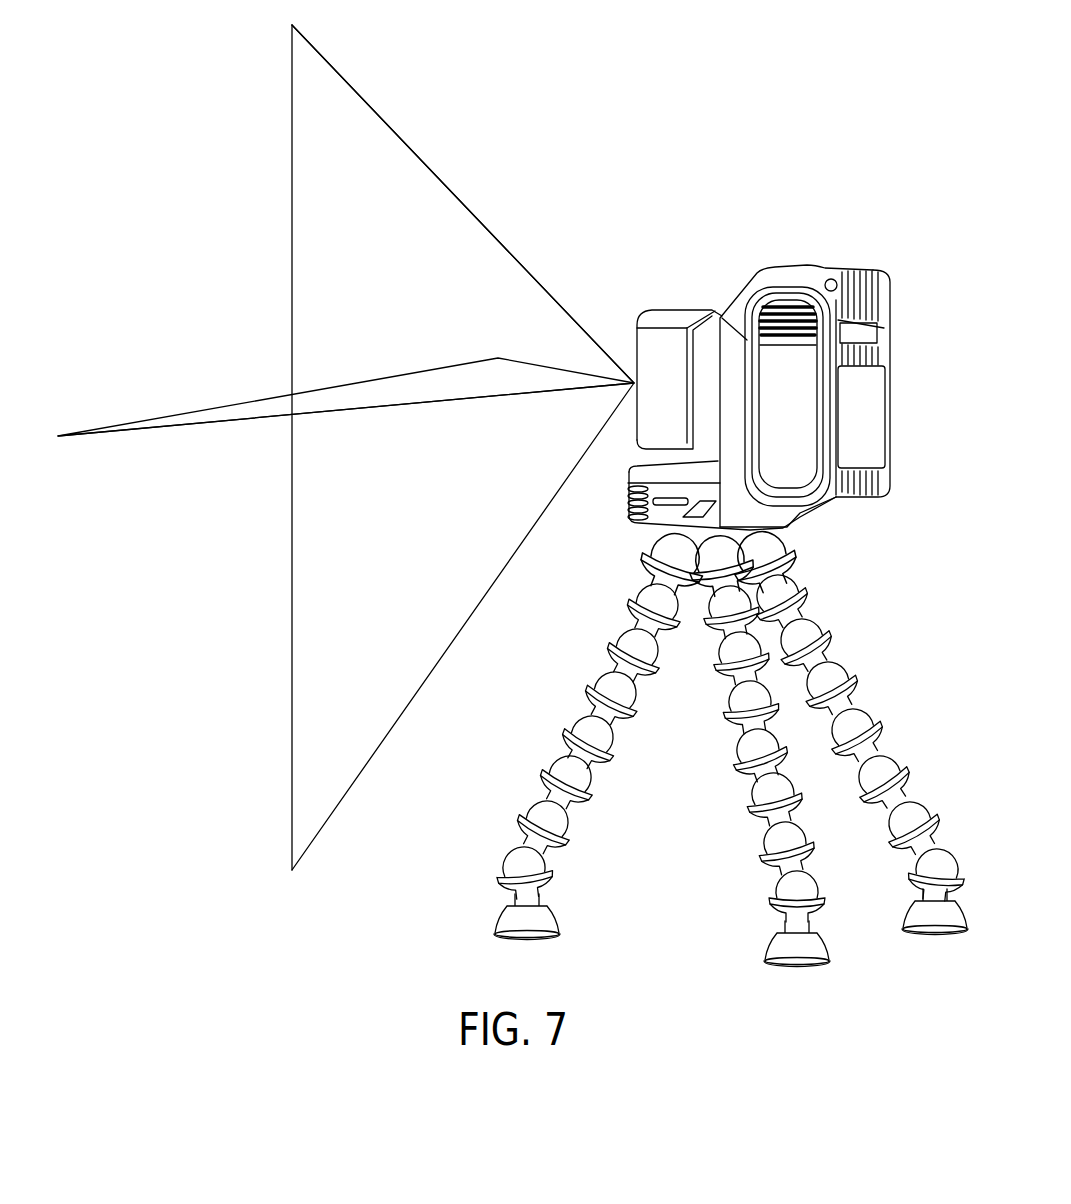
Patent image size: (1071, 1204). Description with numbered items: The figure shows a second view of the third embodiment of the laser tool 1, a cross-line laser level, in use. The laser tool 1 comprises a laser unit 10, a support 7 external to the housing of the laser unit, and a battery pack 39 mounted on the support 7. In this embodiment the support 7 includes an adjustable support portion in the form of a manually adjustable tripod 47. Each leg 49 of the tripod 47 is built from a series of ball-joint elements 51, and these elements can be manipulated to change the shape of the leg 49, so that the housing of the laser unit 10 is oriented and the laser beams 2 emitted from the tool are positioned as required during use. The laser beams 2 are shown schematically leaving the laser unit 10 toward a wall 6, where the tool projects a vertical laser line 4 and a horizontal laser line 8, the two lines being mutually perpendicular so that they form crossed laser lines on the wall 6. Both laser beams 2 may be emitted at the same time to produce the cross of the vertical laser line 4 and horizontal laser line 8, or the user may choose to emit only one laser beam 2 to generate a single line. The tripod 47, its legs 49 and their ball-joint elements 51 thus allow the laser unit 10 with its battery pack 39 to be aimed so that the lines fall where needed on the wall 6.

The laser tool 1 is at (838, 100).
The laser beam 2 is at (460, 196).
The vertical laser line 4 is at (290, 235).
The wall 6 is at (233, 150).
The horizontal laser line 8 is at (238, 402).
The laser unit 10 is at (678, 295).
The battery pack 39 is at (873, 415).
The support 7 is at (648, 596).
The tripod 47 is at (850, 727).
The leg 49 is at (743, 768).
The ball-joint element 51 is at (912, 813).